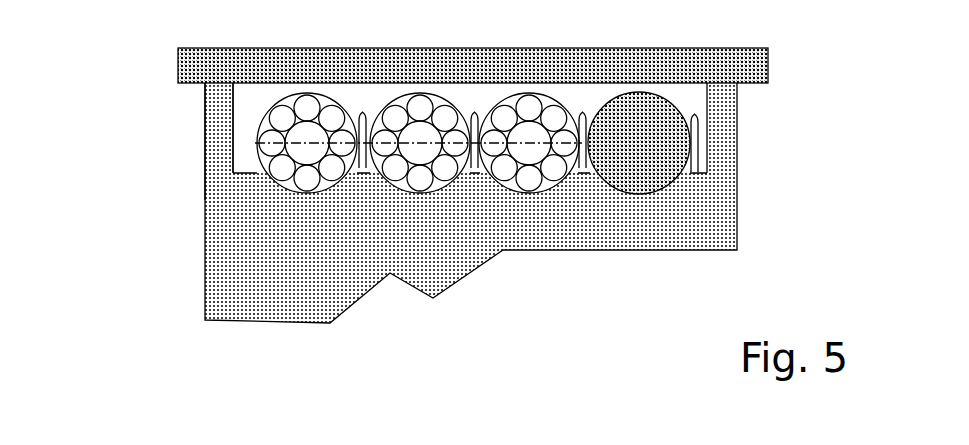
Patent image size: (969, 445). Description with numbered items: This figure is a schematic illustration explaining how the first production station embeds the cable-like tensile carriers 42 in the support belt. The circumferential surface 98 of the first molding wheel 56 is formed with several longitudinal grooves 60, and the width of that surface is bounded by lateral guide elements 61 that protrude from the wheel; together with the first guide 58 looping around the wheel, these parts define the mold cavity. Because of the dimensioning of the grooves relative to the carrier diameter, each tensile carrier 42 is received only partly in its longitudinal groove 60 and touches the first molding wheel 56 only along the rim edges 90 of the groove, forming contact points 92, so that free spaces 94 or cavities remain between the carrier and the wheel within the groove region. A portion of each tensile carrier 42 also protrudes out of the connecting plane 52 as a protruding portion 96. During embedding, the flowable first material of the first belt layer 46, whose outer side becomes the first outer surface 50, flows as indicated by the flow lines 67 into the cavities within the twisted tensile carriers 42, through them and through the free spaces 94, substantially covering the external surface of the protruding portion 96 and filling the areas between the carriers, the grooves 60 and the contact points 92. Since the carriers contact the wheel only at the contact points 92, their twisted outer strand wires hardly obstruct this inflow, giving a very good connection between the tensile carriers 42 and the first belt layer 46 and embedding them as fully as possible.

The tensile carrier 42 is at (268, 150).
The first belt layer 46 is at (690, 104).
The first outer surface 50 is at (520, 44).
The connecting plane 52 is at (360, 178).
The first molding wheel 56 is at (207, 290).
The first guide 58 is at (770, 64).
The longitudinal groove 60 is at (300, 197).
The guide rib 61 is at (220, 122).
The flow line 67 is at (737, 170).
The rim edge 90 is at (259, 178).
The contact point 92 is at (262, 181).
The free space 94 is at (298, 200).
The protruding portion 96 is at (309, 195).
The circumferential surface 98 is at (698, 172).